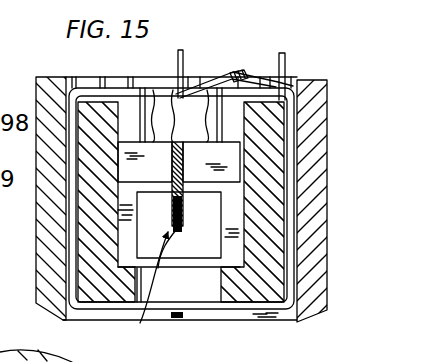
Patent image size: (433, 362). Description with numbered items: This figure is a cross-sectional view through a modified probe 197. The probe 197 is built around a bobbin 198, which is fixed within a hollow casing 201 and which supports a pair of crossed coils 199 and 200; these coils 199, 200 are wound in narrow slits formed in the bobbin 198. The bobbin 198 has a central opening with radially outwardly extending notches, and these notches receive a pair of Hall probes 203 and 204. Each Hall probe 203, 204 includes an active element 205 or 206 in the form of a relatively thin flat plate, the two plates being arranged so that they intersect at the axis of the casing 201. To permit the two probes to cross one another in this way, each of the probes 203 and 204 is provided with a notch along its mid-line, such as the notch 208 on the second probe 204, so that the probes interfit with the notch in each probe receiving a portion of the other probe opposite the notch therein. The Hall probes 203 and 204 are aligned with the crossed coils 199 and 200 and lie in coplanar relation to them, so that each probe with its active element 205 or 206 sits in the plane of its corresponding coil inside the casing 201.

The modified probe 197 is at (96, 72).
The bobbin 198 is at (90, 143).
The crossed coil 199 is at (180, 318).
The crossed coil 200 is at (67, 208).
The hollow casing 201 is at (315, 205).
The Hall probe 203 is at (158, 268).
The Hall probe 204 is at (140, 323).
The active element 205 is at (183, 230).
The active element 206 is at (210, 242).
The notch 208 is at (183, 208).